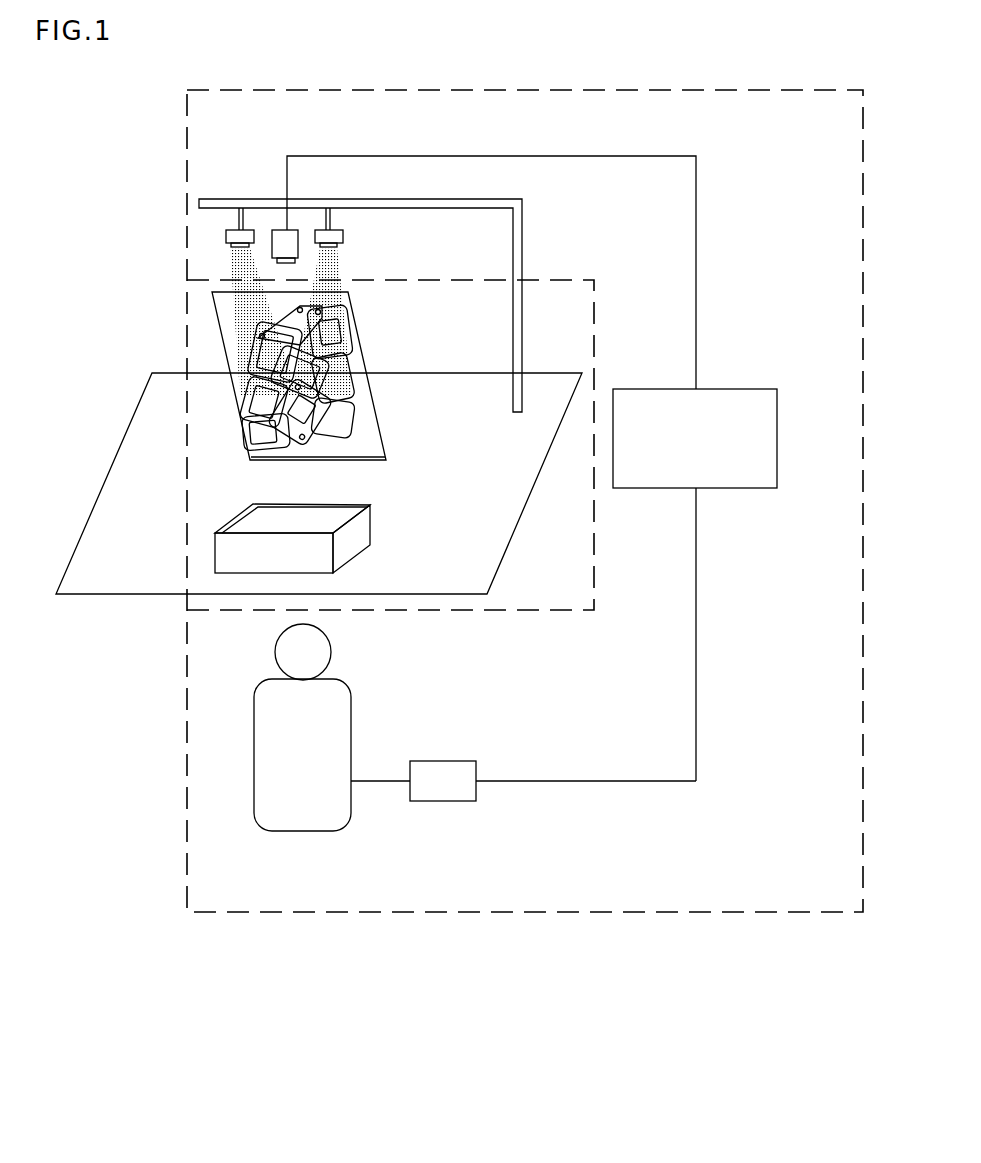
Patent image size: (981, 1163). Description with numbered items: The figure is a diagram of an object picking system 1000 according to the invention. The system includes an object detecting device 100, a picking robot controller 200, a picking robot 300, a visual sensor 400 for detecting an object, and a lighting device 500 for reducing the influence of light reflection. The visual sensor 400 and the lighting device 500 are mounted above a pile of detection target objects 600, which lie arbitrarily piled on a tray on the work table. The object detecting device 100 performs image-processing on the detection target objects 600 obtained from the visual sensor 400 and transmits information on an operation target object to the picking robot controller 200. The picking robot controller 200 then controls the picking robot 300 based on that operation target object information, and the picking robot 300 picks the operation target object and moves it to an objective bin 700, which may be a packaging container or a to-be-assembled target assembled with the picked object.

The object detecting device 100 is at (778, 437).
The picking robot controller 200 is at (443, 802).
The picking robot 300 is at (302, 833).
The visual sensor 400 is at (270, 252).
The lighting device 500 is at (327, 229).
The detection target objects 600 is at (258, 430).
The objective bin 700 is at (223, 549).
The object picking system 1000 is at (722, 913).